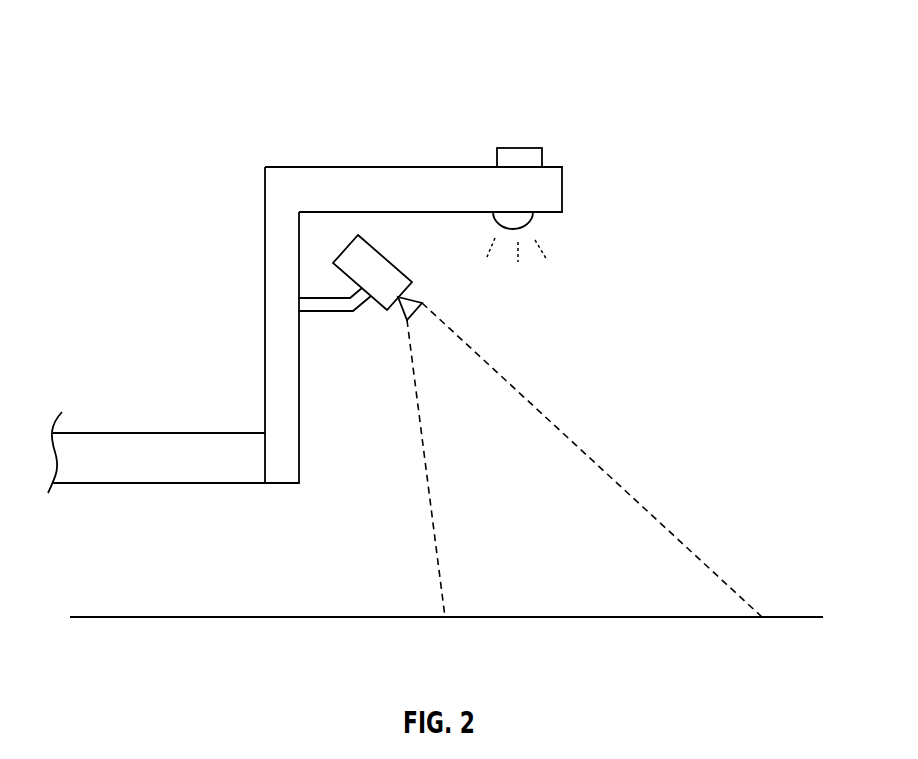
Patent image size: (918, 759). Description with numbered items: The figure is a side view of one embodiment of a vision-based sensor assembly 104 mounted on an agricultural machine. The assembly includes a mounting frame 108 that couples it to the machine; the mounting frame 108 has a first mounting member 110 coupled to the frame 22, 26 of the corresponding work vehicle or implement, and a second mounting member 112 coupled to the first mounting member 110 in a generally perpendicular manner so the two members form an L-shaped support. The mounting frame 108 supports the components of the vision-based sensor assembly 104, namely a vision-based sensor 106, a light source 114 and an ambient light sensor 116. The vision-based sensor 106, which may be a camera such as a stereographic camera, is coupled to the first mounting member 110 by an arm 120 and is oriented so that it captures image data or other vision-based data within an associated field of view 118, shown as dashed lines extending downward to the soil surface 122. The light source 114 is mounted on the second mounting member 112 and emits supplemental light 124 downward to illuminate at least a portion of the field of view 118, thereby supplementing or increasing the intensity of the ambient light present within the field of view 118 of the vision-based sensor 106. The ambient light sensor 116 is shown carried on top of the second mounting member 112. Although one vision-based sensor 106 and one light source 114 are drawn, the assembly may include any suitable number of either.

The vision-based sensor assembly 104 is at (88, 70).
The mounting frame 108 is at (220, 172).
The first mounting member 110 is at (266, 358).
The second mounting member 112 is at (562, 193).
The vision-based sensor 106 is at (343, 252).
The ambient light sensor 116 is at (522, 147).
The light source 114 is at (530, 225).
The supplemental light 124 is at (533, 297).
The arm 120 is at (313, 312).
The field of view 118 is at (437, 535).
The soil surface 122 is at (797, 617).
The frame 22 is at (157, 433).
The frame 26 is at (156, 452).